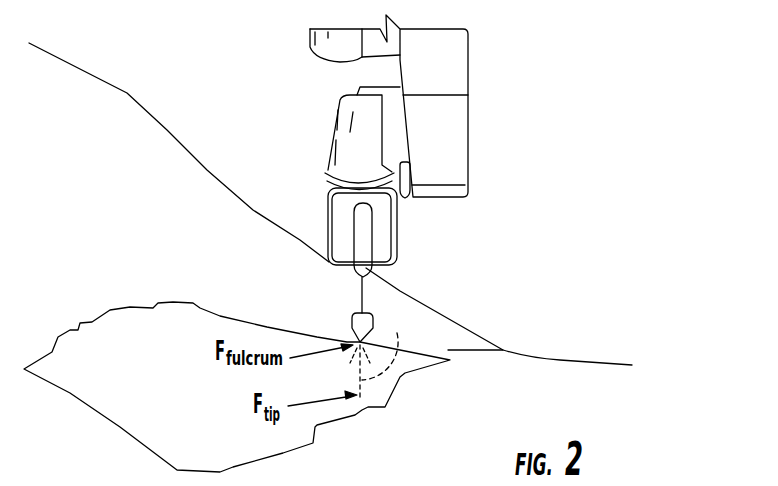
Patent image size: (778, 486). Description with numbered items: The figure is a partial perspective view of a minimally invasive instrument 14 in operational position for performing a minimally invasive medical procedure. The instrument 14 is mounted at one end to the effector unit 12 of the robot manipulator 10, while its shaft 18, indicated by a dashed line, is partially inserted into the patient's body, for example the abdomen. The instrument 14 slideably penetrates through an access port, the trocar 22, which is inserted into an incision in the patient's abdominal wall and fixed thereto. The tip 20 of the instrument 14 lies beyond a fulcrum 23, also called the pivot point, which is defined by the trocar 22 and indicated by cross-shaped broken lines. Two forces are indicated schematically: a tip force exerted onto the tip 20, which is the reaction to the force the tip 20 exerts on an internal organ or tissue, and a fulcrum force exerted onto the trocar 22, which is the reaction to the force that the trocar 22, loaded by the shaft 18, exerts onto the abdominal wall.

The robot manipulator 10 is at (460, 137).
The effector unit 12 is at (383, 244).
The instrument 14 is at (382, 300).
The shaft 18 is at (400, 335).
The tip 20 is at (372, 390).
The trocar 22 is at (357, 340).
The fulcrum 23 is at (345, 338).